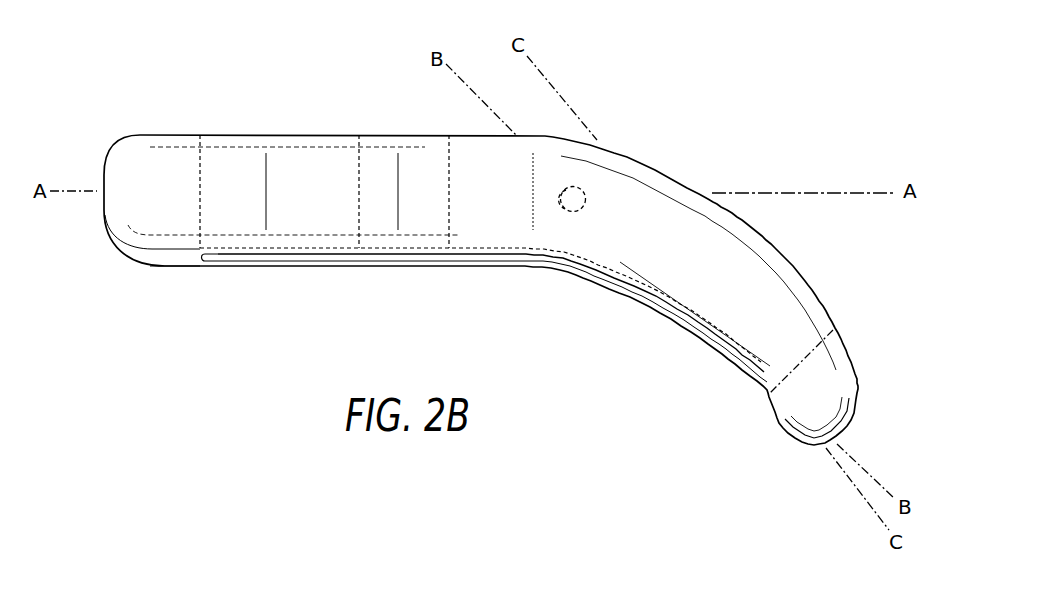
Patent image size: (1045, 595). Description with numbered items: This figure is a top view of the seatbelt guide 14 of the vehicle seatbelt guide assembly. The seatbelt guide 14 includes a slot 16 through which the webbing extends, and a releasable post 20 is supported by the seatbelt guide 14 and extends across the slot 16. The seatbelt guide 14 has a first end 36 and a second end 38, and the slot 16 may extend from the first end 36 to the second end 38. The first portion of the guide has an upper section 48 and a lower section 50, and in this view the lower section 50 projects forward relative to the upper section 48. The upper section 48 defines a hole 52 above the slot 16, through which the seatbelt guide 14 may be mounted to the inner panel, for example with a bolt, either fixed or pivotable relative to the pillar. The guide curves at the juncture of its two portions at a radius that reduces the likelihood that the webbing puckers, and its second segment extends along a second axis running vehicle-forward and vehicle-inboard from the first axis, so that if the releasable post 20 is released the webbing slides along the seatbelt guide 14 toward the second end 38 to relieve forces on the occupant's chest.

The seatbelt guide 14 is at (709, 121).
The slot 16 is at (212, 263).
The releasable post 20 is at (584, 198).
The first end 36 is at (163, 262).
The second end 38 is at (774, 413).
The upper section 48 is at (140, 198).
The lower section 50 is at (283, 268).
The hole 52 is at (366, 187).